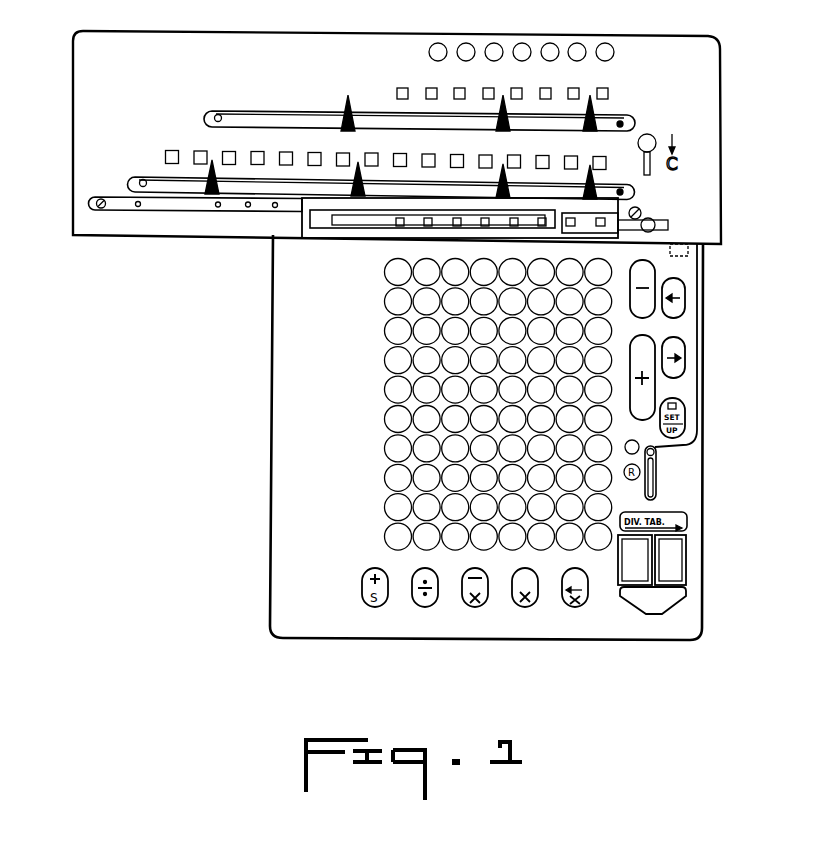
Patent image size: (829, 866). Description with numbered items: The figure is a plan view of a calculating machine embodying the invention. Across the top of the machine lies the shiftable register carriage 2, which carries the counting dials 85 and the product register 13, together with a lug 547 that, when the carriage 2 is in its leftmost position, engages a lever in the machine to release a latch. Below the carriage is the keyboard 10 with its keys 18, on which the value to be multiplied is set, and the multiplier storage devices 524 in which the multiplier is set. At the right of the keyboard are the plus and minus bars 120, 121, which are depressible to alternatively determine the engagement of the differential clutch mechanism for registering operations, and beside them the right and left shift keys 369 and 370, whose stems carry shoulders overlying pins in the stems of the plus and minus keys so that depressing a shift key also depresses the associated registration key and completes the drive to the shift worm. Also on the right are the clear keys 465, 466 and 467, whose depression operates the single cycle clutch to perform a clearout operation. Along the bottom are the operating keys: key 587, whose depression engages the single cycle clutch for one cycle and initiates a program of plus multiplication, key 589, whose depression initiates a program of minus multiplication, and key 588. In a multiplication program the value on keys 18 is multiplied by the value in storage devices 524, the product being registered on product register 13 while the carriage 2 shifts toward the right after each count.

The register carriage 2 is at (77, 52).
The keyboard 10 is at (285, 422).
The product register 13 is at (176, 150).
The keys 18 is at (395, 503).
The counting dials 85 is at (400, 93).
The plus bar 120 is at (648, 392).
The minus bar 121 is at (648, 274).
The right shift key 369 is at (675, 356).
The left shift key 370 is at (672, 308).
The clear key 465 is at (622, 565).
The clear key 466 is at (668, 598).
The clear key 467 is at (677, 568).
The multiplier storage devices 524 is at (400, 226).
The lug 547 is at (688, 252).
The operating key 587 is at (575, 607).
The accumulate multiply key 588 is at (525, 607).
The key 589 is at (475, 607).